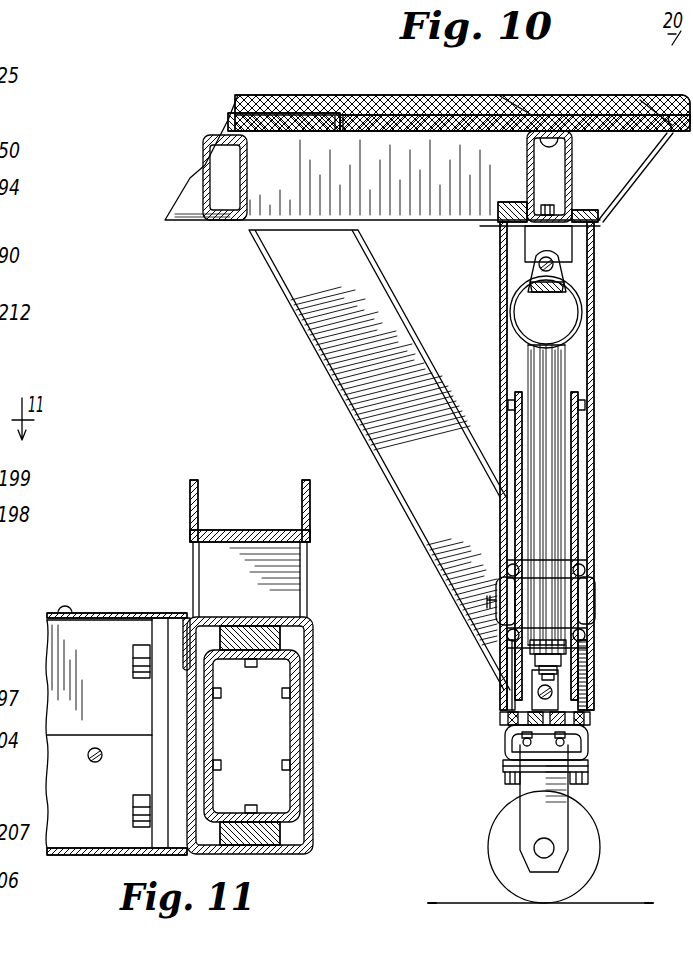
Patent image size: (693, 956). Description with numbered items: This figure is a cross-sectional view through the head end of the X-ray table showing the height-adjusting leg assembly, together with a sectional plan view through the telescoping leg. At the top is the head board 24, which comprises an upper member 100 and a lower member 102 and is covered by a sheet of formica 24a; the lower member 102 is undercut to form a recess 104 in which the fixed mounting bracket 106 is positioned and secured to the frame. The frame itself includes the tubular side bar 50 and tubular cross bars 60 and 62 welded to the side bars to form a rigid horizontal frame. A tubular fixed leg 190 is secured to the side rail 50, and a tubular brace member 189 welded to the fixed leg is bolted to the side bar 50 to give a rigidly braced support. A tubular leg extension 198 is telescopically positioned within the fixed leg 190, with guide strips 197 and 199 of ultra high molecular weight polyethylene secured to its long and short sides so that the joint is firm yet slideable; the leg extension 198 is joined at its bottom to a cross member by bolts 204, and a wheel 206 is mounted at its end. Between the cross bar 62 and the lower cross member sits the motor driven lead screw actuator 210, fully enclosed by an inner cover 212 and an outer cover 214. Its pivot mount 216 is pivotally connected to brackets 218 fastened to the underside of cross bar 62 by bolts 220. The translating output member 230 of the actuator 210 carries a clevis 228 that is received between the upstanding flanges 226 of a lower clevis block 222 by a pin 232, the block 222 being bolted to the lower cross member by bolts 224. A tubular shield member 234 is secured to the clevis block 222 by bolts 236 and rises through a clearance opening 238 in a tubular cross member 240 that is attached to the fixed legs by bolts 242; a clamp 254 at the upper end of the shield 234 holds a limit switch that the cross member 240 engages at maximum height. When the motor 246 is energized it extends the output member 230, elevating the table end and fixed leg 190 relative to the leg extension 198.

In FIG. 10, the head board 24 is at (448, 98).
In FIG. 10, the sheet of formica 24a is at (543, 77).
In FIG. 10, the upper member 100 is at (576, 100).
In FIG. 10, the lower member 102 is at (402, 130).
In FIG. 10, the recess 104 is at (336, 116).
In FIG. 10, the fixed mounting bracket 106 is at (230, 123).
In FIG. 10, the tubular side bar 50 is at (468, 222).
In FIG. 10, the tubular cross bar 60 is at (205, 190).
In FIG. 10, the tubular cross bar 62 is at (612, 186).
In FIG. 10, the bolts 220 is at (560, 200).
In FIG. 10, the inner cover 212 is at (500, 368).
In FIG. 11, the inner cover 212 is at (95, 613).
In FIG. 10, the outer cover 214 is at (596, 478).
In FIG. 11, the outer cover 214 is at (115, 855).
In FIG. 10, the brackets 218 is at (530, 250).
In FIG. 10, the pivot mount 216 is at (565, 275).
In FIG. 10, the motor 246 is at (565, 310).
In FIG. 10, the lead screw actuator 210 is at (582, 372).
In FIG. 10, the tubular shield member 234 is at (578, 440).
In FIG. 10, the clamp 254 is at (585, 404).
In FIG. 10, the bolts 242 is at (588, 562).
In FIG. 11, the bolts 242 is at (141, 645).
In FIG. 10, the tubular cross member 240 is at (582, 582).
In FIG. 11, the tubular cross member 240 is at (62, 650).
In FIG. 10, the clearance opening 238 is at (584, 600).
In FIG. 10, the translating output member 230 is at (580, 648).
In FIG. 10, the clevis 228 is at (538, 670).
In FIG. 10, the upstanding flanges 226 is at (535, 708).
In FIG. 10, the pin 232 is at (552, 692).
In FIG. 10, the tubular fixed leg 190 is at (587, 672).
In FIG. 11, the tubular fixed leg 190 is at (313, 847).
In FIG. 10, the bolts 236 is at (515, 718).
In FIG. 10, the tubular leg extension 198 is at (588, 742).
In FIG. 11, the tubular leg extension 198 is at (300, 822).
In FIG. 10, the guide strips 199 is at (523, 738).
In FIG. 11, the guide strips 199 is at (304, 640).
In FIG. 10, the bolts 224 is at (520, 748).
In FIG. 10, the bolts 204 is at (526, 778).
In FIG. 10, the lower clevis block 222 is at (548, 760).
In FIG. 10, the wheels 206 is at (592, 862).
In FIG. 10, the tubular brace member 189 is at (328, 362).
In FIG. 11, the tubular brace member 189 is at (190, 502).
In FIG. 11, the guide strips 197 is at (282, 765).